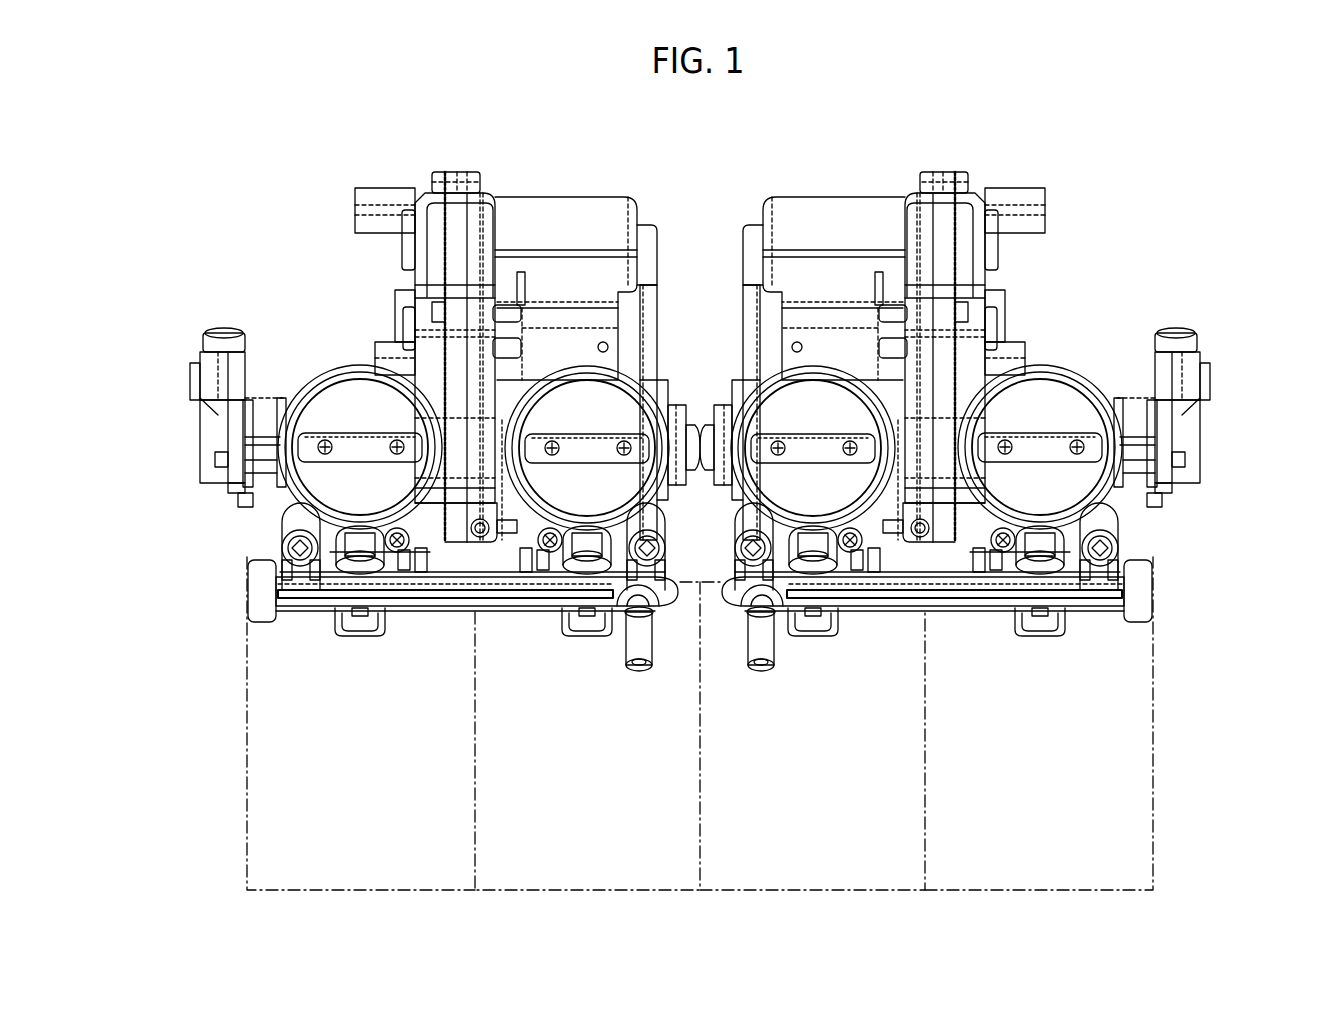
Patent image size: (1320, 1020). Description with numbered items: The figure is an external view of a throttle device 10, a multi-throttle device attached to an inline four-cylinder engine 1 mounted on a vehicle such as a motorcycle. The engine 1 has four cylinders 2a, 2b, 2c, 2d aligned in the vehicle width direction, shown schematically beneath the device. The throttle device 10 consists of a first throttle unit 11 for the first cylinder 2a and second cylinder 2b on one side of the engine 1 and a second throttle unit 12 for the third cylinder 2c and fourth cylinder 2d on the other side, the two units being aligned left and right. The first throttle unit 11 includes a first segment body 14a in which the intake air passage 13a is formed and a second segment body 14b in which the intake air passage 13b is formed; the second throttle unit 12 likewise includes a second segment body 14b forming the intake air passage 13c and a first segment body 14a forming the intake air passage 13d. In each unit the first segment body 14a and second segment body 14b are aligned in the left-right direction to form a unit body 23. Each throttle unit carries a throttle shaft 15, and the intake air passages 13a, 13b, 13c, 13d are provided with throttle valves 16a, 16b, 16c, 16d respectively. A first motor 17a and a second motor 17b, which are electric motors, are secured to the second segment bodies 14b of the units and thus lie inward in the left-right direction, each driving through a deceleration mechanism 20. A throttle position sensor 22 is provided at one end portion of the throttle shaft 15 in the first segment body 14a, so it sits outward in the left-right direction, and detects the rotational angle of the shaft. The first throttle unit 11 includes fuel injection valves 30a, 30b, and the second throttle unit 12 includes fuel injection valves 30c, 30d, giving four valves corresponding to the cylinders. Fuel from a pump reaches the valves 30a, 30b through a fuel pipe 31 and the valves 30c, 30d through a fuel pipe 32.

The engine 1 is at (1157, 838).
The #1 cylinder 2a is at (348, 892).
The #2 cylinder 2b is at (540, 892).
The #3 cylinder 2c is at (867, 892).
The #4 cylinder 2d is at (1059, 892).
The throttle device 10 is at (1150, 183).
The first throttle unit 11 is at (430, 155).
The second throttle unit 12 is at (972, 155).
The intake air passage 13a is at (340, 378).
The intake air passage 13b is at (582, 372).
The intake air passage 13c is at (818, 372).
The intake air passage 13d is at (1060, 378).
The first segment body 14a is at (393, 348).
The second segment body 14b is at (660, 338).
The throttle shaft 15 is at (690, 472).
The throttle valve 16a is at (322, 478).
The throttle valve 16b is at (557, 480).
The throttle valve 16c is at (843, 480).
The throttle valve 16d is at (1078, 478).
The first motor 17a is at (537, 197).
The second motor 17b is at (865, 197).
The deceleration mechanism 20 is at (455, 193).
The throttle position sensor 22 is at (200, 355).
The unit body 23 is at (420, 187).
The fuel injection valve 30a is at (357, 636).
The fuel injection valve 30b is at (587, 636).
The fuel injection valve 30c is at (813, 636).
The fuel injection valve 30d is at (1043, 636).
The fuel pipe 31 is at (302, 607).
The fuel pipe 32 is at (1098, 607).